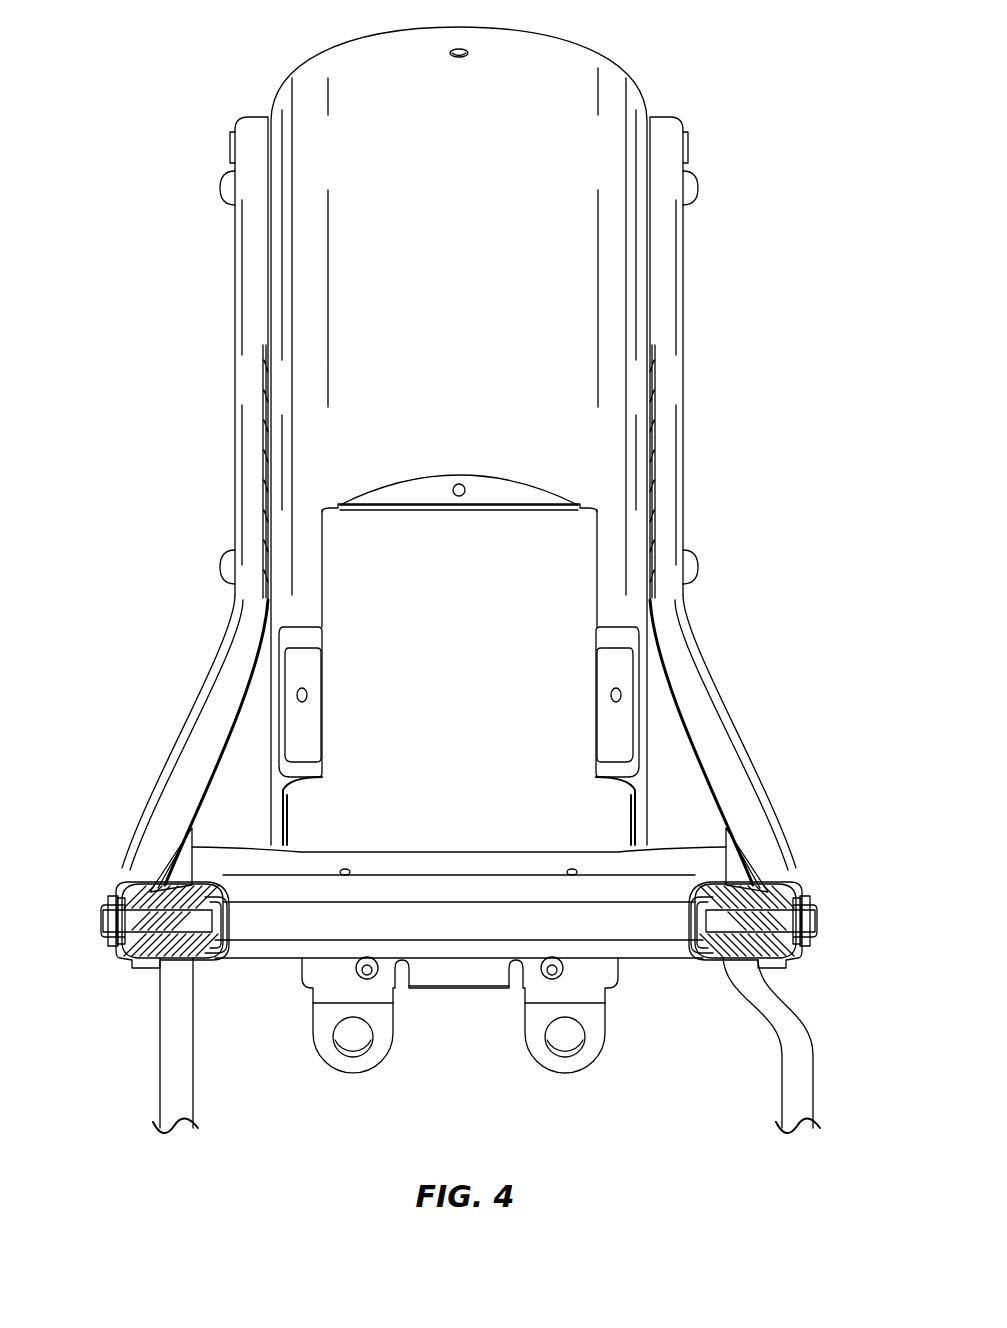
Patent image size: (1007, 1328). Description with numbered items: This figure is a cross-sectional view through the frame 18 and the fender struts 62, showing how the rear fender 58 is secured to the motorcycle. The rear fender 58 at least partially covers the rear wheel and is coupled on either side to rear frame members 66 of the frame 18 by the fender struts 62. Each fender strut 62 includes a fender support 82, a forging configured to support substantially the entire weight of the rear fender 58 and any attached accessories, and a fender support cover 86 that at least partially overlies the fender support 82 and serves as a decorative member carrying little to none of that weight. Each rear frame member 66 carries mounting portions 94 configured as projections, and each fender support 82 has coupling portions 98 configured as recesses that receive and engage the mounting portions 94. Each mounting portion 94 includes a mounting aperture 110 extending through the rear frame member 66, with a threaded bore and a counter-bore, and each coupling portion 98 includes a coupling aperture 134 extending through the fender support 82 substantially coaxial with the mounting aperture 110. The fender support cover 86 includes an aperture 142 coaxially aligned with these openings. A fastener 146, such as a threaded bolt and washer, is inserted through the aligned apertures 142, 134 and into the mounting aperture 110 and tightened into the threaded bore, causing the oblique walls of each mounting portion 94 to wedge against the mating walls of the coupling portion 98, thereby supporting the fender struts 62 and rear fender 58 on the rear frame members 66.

The frame 18 is at (463, 968).
The rear fender 58 is at (617, 70).
The fender strut 62 is at (197, 698).
The rear frame member 66 is at (183, 1085).
The fender support 82 is at (137, 968).
The fender support cover 86 is at (193, 768).
The mounting portion 94 is at (150, 880).
The coupling portion 98 is at (165, 945).
The mounting aperture 110 is at (212, 921).
The coupling aperture 134 is at (100, 921).
The aperture 142 is at (108, 934).
The fastener 146 is at (106, 910).